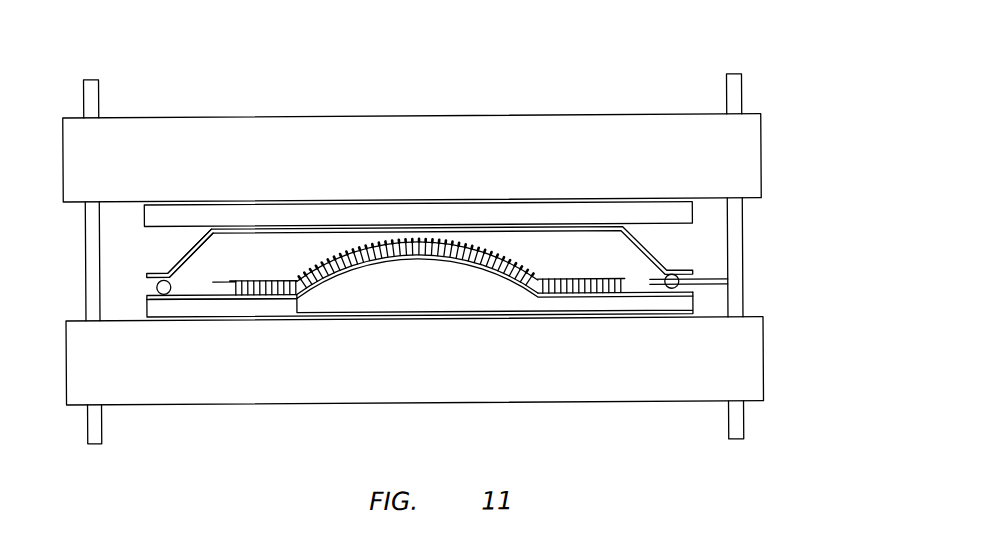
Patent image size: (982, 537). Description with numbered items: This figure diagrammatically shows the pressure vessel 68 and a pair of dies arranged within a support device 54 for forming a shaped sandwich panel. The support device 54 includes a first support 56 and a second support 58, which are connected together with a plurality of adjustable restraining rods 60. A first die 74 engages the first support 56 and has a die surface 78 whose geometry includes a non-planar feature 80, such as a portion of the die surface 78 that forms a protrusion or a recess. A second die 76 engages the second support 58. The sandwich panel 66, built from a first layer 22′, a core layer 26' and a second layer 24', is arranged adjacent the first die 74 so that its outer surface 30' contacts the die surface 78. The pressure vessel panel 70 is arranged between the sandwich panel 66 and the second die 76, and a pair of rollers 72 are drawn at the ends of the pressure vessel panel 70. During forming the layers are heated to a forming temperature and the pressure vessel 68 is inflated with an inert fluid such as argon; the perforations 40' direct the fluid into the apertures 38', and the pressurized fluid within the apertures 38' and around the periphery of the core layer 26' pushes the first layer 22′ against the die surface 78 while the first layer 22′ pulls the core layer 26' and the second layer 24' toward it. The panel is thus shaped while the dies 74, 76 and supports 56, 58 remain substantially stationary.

The support device 54 is at (693, 70).
The first support 56 is at (763, 362).
The second support 58 is at (762, 162).
The adjustable restraining rods 60 is at (83, 97).
The sandwich panel 66 is at (221, 303).
The pressure vessel 68 is at (172, 254).
The pressure vessel panel 70 is at (206, 239).
The rollers 72 is at (157, 288).
The first die 74 is at (332, 305).
The second die 76 is at (345, 205).
The die surface 78 is at (628, 299).
The non-planar feature 80 is at (492, 291).
The first layer 22′ is at (188, 301).
The second layer 24' is at (375, 212).
The core layer 26' is at (429, 313).
The outer surface 30' is at (495, 324).
The apertures 38' is at (440, 353).
The perforations 40' is at (568, 210).